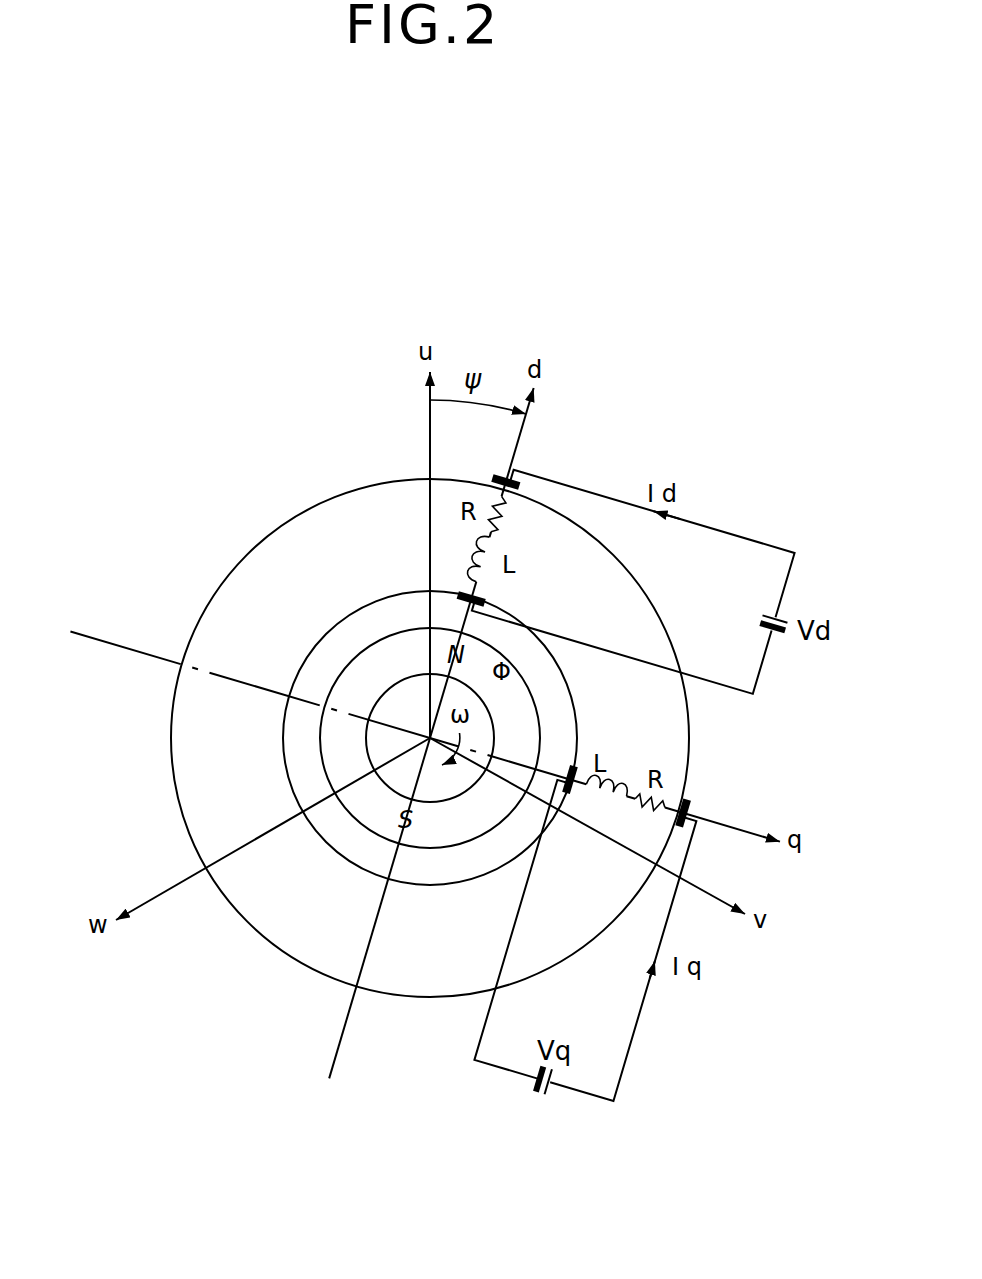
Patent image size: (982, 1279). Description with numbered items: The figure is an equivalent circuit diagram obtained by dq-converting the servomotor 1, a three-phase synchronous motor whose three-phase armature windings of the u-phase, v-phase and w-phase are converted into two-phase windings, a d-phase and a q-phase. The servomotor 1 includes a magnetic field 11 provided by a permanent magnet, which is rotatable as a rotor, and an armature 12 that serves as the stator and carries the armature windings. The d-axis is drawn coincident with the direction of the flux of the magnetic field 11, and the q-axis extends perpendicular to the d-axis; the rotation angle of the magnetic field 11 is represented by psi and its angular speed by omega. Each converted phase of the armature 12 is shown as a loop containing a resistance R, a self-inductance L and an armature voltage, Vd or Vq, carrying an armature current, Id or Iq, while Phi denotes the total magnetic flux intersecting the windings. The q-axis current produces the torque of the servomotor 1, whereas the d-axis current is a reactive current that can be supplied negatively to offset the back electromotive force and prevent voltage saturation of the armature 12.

The servomotor 1 is at (198, 972).
The magnetic field 11 is at (364, 742).
The armature 12 is at (290, 784).